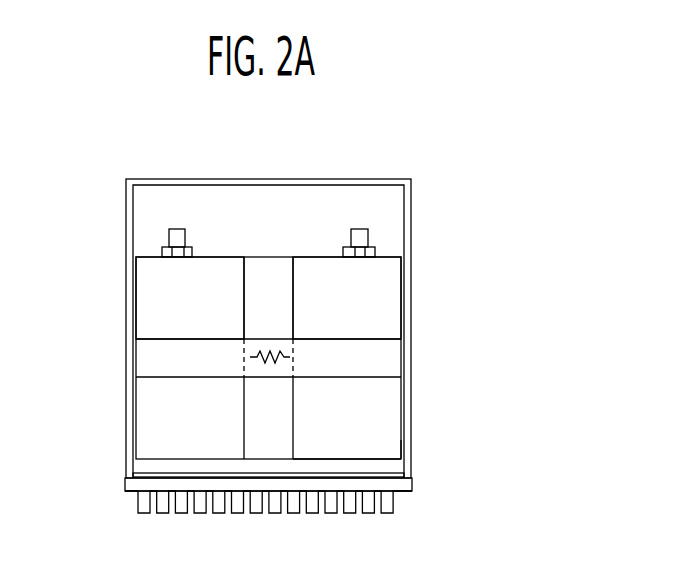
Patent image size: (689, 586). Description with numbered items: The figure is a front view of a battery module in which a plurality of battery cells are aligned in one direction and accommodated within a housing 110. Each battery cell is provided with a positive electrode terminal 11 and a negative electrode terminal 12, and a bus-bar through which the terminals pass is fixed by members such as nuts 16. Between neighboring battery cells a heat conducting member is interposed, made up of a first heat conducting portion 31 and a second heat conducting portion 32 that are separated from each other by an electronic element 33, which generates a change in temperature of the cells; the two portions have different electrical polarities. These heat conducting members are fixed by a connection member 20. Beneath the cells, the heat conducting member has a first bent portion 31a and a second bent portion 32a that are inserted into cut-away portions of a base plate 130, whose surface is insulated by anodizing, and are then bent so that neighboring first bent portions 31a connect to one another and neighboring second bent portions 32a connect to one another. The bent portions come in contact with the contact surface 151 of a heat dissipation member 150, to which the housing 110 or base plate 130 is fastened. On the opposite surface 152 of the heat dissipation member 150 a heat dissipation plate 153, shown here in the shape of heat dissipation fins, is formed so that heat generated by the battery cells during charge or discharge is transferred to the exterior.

The positive electrode terminal 11 is at (178, 229).
The negative electrode terminal 12 is at (360, 229).
The nut 16 is at (193, 251).
The connection member 20 is at (386, 359).
The first heat conducting portion 31 is at (158, 296).
The second heat conducting portion 32 is at (386, 298).
The first bent portion 31a is at (172, 476).
The second bent portion 32a is at (347, 474).
The electronic element 33 is at (250, 357).
The housing 110 is at (412, 225).
The base plate 130 is at (402, 465).
The heat dissipation member 150 is at (349, 497).
The contact surface 151 is at (410, 473).
The opposite surface 152 is at (410, 490).
The heat dissipation plate 153 is at (397, 502).